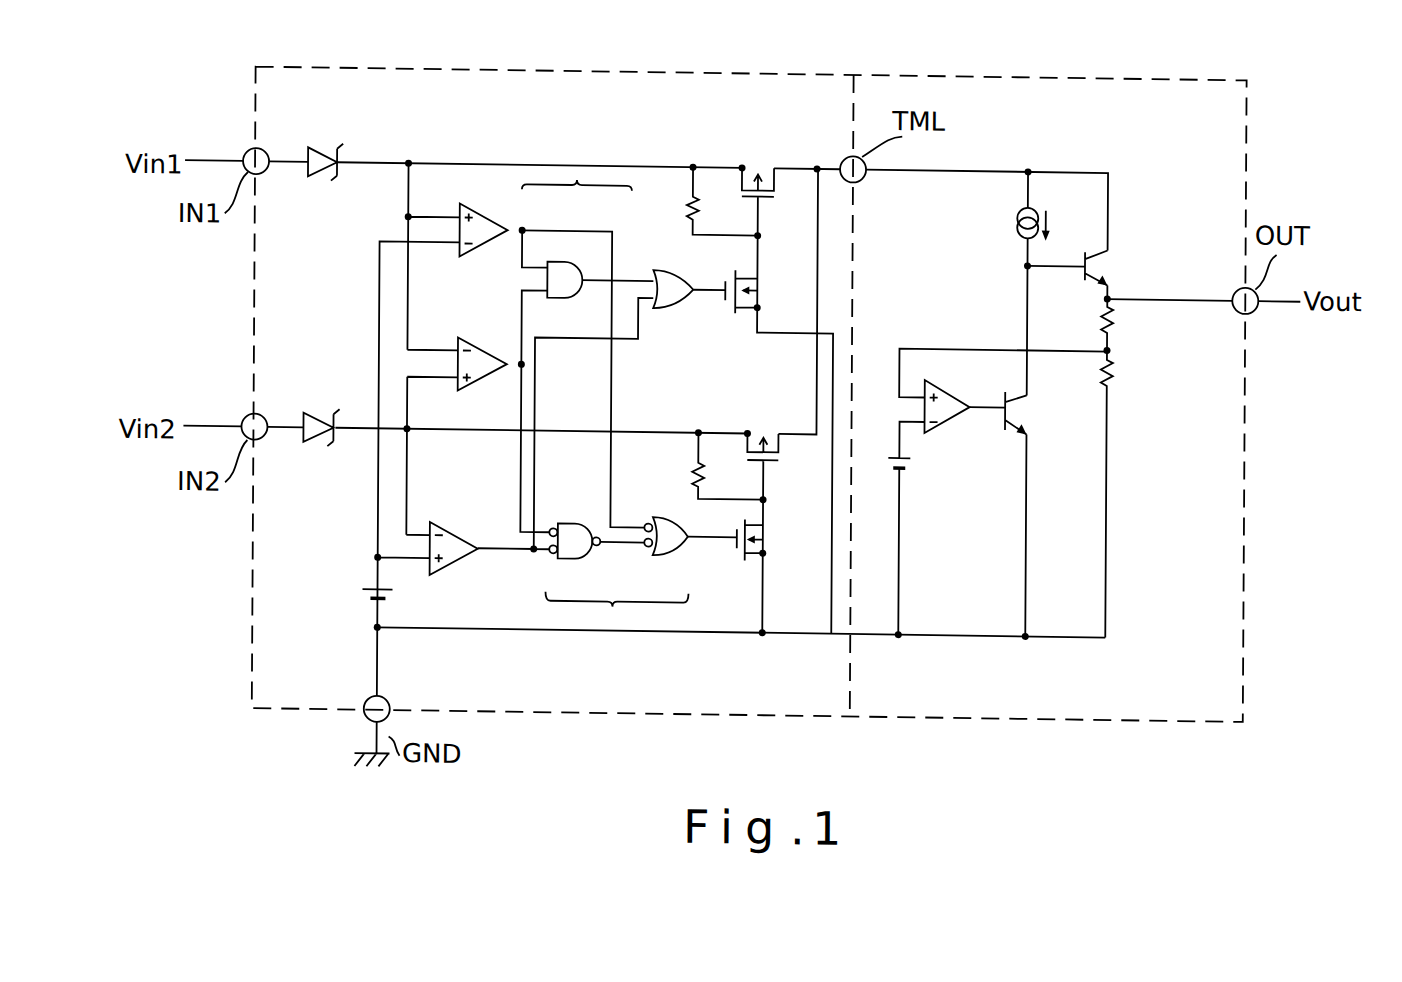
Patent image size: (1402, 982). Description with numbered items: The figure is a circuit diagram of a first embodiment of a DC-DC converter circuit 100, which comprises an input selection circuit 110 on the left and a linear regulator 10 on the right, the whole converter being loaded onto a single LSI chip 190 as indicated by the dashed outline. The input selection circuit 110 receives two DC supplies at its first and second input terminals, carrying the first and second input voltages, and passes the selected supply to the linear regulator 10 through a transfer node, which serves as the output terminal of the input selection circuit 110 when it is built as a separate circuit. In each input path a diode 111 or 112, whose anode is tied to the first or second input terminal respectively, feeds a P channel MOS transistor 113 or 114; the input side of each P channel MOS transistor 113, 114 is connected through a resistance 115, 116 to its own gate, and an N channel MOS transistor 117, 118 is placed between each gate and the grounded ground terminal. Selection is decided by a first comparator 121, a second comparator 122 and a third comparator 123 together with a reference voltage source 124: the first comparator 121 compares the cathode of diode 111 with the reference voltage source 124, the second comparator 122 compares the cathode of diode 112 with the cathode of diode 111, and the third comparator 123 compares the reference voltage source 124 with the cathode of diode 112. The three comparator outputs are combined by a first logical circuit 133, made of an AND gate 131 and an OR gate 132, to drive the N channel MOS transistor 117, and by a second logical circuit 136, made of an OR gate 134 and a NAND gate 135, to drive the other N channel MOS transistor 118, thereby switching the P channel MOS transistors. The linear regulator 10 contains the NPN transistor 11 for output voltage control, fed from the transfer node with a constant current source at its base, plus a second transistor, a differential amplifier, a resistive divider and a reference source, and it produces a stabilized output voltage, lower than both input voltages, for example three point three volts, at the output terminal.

The DC-DC converter circuit 100 is at (1240, 55).
The input selection circuit 110 is at (690, 117).
The LSI chip 190 is at (969, 66).
The linear regulator 10 is at (1190, 155).
The NPN transistor 11 is at (1107, 246).
The diode 111 is at (323, 142).
The diode 112 is at (332, 405).
The P channel MOS transistor 113 is at (759, 144).
The P channel MOS transistor 114 is at (760, 418).
The resistance 115 is at (688, 207).
The resistance 116 is at (693, 466).
The N channel MOS transistor 117 is at (764, 276).
The N channel MOS transistor 118 is at (778, 527).
The first comparator 121 is at (488, 205).
The second comparator 122 is at (485, 338).
The third comparator 123 is at (463, 521).
The reference voltage source 124 is at (358, 584).
The AND gate 131 is at (550, 247).
The OR gate 132 is at (668, 258).
The first logical circuit 133 is at (578, 172).
The OR gate 134 is at (583, 552).
The NAND gate 135 is at (670, 551).
The second logical circuit 136 is at (616, 613).